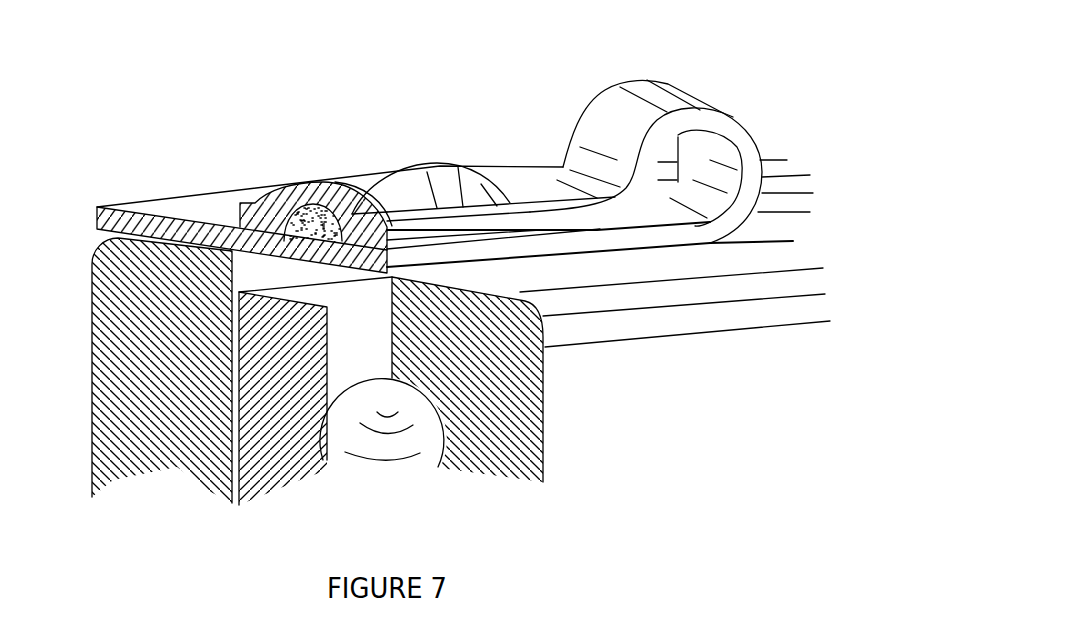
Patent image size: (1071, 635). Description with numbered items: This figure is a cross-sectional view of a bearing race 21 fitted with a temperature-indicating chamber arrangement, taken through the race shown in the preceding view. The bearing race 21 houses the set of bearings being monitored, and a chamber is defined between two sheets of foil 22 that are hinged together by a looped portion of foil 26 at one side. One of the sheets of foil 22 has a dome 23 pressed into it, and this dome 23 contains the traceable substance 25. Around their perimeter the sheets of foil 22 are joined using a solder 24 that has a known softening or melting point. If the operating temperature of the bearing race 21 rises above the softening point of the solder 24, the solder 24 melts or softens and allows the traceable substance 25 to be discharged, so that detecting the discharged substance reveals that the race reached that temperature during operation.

The bearing race 21 is at (91, 251).
The sheets of foil 22 is at (160, 203).
The dome 23 is at (312, 185).
The solder 24 is at (240, 225).
The traceable substance 25 is at (296, 203).
The looped portion of foil 26 is at (657, 95).